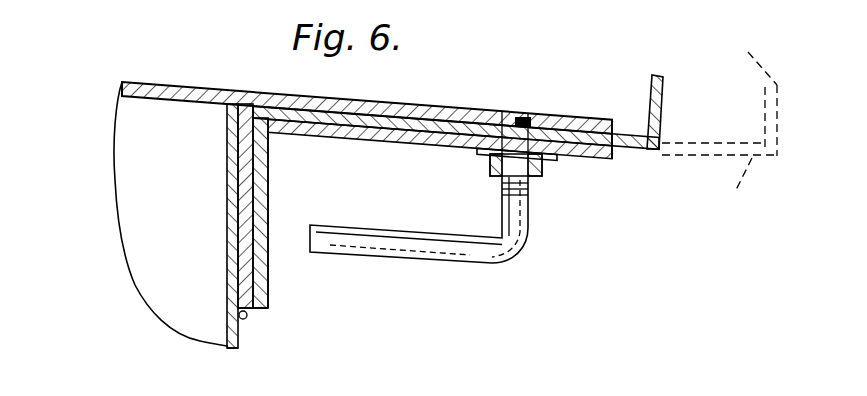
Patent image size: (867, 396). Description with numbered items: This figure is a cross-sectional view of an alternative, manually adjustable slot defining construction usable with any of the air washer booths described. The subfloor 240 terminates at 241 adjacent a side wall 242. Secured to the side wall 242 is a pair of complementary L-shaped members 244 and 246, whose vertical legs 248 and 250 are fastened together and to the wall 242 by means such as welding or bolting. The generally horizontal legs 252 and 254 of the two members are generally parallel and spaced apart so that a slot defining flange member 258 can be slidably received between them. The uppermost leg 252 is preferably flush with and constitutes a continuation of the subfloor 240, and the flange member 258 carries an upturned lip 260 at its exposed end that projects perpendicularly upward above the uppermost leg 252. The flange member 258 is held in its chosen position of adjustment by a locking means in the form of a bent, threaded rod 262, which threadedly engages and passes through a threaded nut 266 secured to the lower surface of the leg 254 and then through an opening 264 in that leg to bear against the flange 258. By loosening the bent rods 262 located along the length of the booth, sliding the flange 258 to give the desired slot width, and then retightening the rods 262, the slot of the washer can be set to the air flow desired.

The subfloor 240 is at (185, 47).
The termination of subfloor 241 is at (230, 93).
The side wall 242 is at (238, 181).
The L-shaped member 244 is at (401, 103).
The L-shaped member 246 is at (334, 140).
The vertical leg 248 is at (228, 282).
The vertical leg 250 is at (268, 272).
The uppermost horizontal leg 252 is at (468, 110).
The horizontal leg 254 is at (594, 158).
The slot defining flange member 258 is at (632, 148).
The upturned lip 260 is at (664, 74).
The bent threaded rod 262 is at (455, 261).
The opening 264 is at (524, 118).
The threaded nut 266 is at (535, 177).